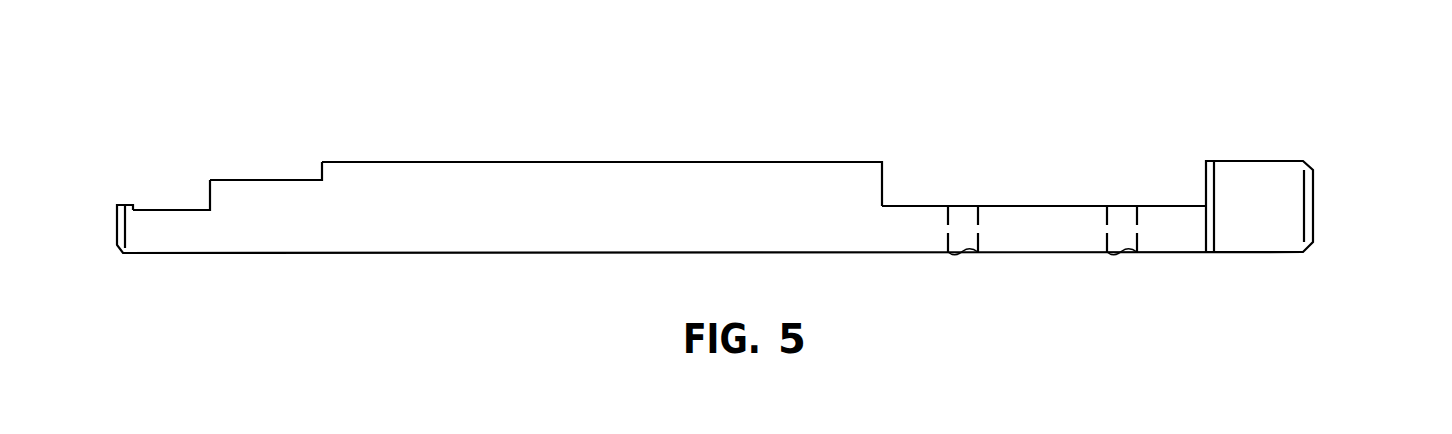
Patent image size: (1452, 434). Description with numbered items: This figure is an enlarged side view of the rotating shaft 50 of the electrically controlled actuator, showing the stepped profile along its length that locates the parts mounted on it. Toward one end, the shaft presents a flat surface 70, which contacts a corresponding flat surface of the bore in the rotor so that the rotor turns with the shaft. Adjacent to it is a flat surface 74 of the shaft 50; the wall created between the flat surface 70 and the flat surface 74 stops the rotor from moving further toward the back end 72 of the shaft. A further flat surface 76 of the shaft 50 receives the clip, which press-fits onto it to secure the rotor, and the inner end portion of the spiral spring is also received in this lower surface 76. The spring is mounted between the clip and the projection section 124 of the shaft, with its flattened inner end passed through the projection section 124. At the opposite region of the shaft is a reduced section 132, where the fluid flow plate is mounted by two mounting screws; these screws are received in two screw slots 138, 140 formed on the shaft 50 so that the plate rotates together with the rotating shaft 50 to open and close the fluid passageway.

The rotating shaft 50 is at (1298, 132).
The flat surface 70 is at (257, 179).
The back end 72 is at (1313, 206).
The flat surface 74 is at (667, 161).
The flat surface 76 is at (167, 208).
The projection section 124 is at (130, 207).
The reduced section 132 is at (1042, 206).
The screw slot 138 is at (948, 235).
The screw slot 140 is at (1135, 235).